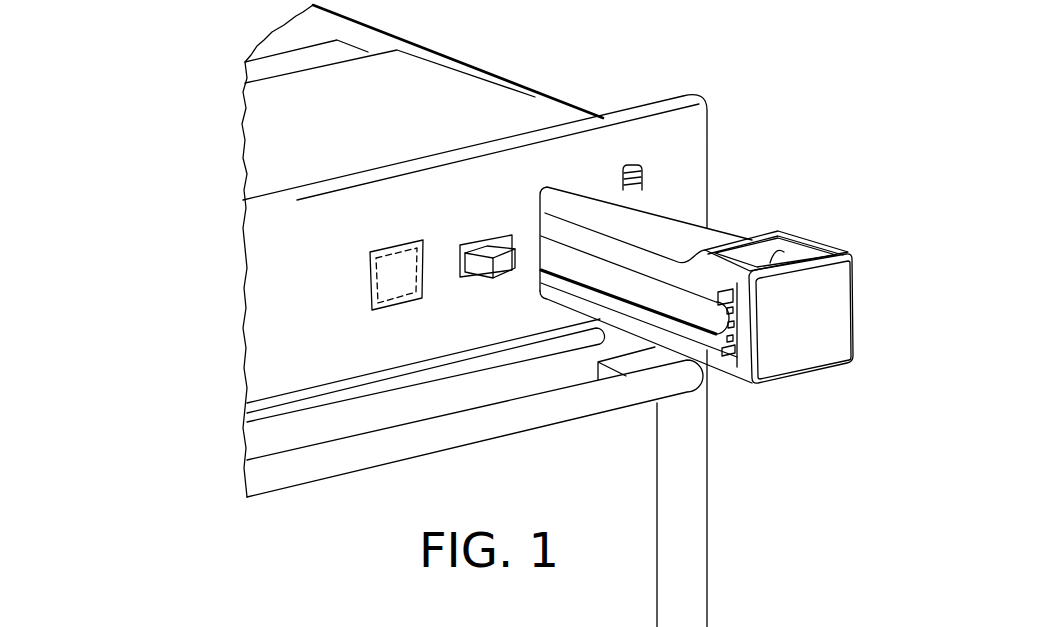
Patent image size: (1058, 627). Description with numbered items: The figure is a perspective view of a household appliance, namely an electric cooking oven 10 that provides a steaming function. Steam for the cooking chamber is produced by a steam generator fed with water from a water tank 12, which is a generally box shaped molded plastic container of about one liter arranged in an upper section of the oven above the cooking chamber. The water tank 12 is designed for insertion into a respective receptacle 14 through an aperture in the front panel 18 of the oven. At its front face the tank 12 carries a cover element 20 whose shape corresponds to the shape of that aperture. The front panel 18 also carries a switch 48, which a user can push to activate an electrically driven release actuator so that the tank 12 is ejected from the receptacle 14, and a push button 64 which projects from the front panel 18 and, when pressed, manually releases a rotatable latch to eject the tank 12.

The oven 10 is at (728, 79).
The water tank 12 is at (706, 314).
The receptacle 14 is at (615, 180).
The front panel 18 is at (685, 143).
The cover element 20 is at (800, 335).
The switch 48 is at (404, 262).
The push button 64 is at (497, 250).